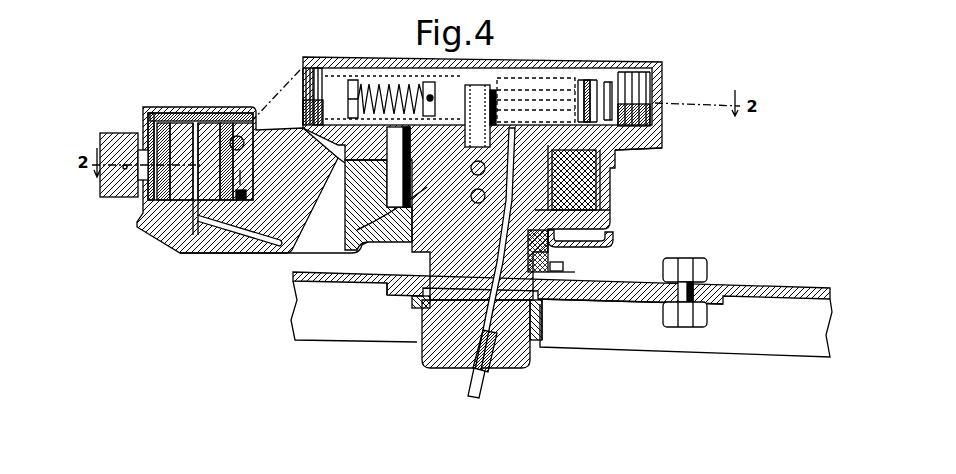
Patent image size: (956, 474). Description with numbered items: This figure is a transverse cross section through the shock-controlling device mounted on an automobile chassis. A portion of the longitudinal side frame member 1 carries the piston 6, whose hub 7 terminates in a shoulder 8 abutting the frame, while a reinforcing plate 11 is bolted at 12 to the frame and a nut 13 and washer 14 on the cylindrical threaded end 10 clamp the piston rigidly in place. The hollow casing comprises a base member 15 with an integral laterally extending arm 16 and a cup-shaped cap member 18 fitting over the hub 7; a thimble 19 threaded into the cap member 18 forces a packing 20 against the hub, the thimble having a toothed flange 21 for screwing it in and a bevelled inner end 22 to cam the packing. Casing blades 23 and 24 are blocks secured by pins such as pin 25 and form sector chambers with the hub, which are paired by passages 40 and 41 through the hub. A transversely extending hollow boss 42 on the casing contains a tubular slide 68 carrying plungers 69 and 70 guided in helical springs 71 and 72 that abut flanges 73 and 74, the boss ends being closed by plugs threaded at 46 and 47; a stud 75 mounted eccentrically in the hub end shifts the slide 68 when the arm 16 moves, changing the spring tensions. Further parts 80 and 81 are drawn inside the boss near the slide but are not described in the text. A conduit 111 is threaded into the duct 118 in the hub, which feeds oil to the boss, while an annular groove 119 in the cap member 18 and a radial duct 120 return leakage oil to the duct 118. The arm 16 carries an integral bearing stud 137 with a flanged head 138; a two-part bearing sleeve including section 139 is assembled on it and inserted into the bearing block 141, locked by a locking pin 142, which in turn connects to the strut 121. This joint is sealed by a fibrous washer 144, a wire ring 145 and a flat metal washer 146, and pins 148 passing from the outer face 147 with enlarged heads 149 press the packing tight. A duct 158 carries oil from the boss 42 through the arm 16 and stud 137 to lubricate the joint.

The longitudinal side frame member 1 is at (765, 284).
The piston 6 is at (445, 318).
The hub 7 is at (372, 240).
The shoulder 8 is at (418, 302).
The cylindrical threaded end 10 is at (494, 368).
The reinforcing plate 11 is at (608, 304).
The bolt 12 is at (687, 263).
The nut 13 is at (532, 364).
The washer 14 is at (560, 340).
The base member 15 is at (616, 156).
The arm 16 is at (208, 252).
The cup-shaped cap member 18 is at (603, 206).
The thimble 19 is at (564, 266).
The packing 20 is at (606, 247).
The toothed flange 21 is at (570, 272).
The bevelled inner end 22 is at (400, 292).
The blade 23 is at (345, 195).
The blade 24 is at (600, 180).
The pin 25 is at (357, 230).
The passage 40 is at (478, 168).
The passage 41 is at (478, 196).
The hollow boss 42 is at (570, 65).
The threaded seat 46 is at (302, 78).
The threaded seat 47 is at (655, 90).
The slide 68 is at (540, 80).
The plunger 69 is at (318, 76).
The plunger 70 is at (626, 95).
The helical spring 71 is at (365, 82).
The helical spring 72 is at (610, 100).
The flange 73 is at (350, 85).
The flange 74 is at (590, 95).
The stud 75 is at (486, 88).
The pin 80 is at (428, 97).
The piston 81 is at (425, 90).
The conduit 111 is at (470, 386).
The duct 118 is at (475, 356).
The annular groove 119 is at (610, 219).
The radial duct 120 is at (552, 298).
The strut 121 is at (118, 192).
The bearing stud 137 is at (185, 130).
The flanged head 138 is at (225, 123).
The bearing sleeve section 139 is at (160, 196).
The bearing block 141 is at (243, 110).
The locking pin 142 is at (248, 138).
The fibrous washer 144 is at (246, 194).
The wire ring 145 is at (241, 186).
The flat metal washer 146 is at (245, 143).
The outer face 147 is at (172, 113).
The pin 148 is at (152, 140).
The enlarged head 149 is at (150, 113).
The duct 158 is at (231, 242).